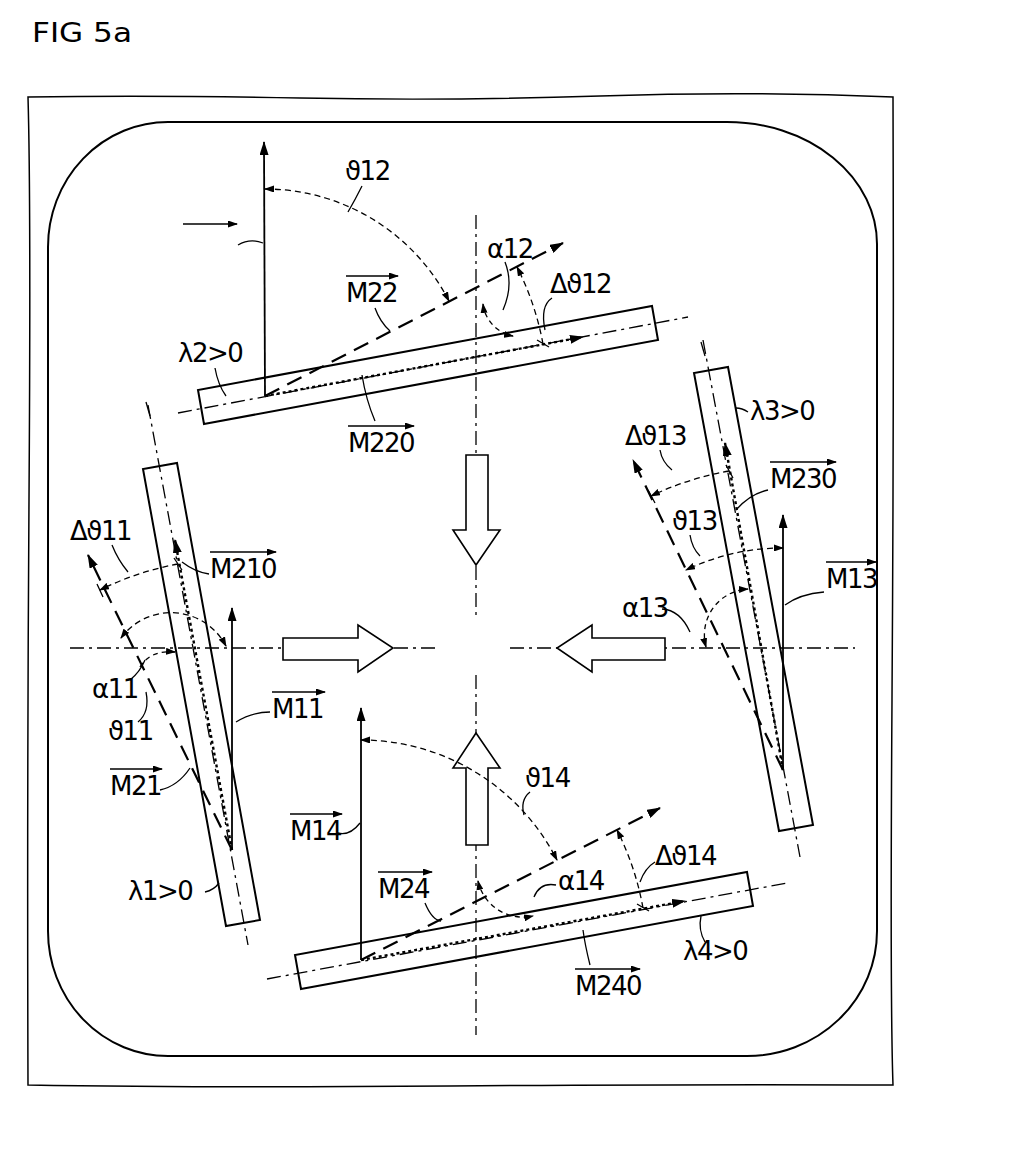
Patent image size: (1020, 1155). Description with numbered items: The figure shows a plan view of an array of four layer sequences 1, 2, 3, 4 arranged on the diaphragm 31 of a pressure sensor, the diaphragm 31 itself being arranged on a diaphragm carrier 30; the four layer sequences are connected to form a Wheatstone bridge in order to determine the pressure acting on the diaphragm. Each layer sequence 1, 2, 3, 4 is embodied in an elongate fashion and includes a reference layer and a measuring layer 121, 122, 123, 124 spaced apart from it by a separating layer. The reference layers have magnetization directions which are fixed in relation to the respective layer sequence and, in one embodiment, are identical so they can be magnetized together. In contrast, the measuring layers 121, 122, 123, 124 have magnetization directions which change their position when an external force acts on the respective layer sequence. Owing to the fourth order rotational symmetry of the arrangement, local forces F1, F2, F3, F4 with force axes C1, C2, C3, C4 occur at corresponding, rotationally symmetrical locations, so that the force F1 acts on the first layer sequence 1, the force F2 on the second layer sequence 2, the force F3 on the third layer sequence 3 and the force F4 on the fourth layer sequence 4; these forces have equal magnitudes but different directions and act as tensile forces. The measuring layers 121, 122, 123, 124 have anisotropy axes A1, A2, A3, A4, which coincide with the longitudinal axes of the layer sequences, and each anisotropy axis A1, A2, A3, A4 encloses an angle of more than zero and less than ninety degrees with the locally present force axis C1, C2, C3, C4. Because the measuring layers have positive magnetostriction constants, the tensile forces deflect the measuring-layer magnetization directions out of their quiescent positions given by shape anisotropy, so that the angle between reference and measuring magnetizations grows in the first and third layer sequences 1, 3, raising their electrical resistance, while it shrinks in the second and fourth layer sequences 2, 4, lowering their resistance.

The diaphragm carrier 30 is at (750, 100).
The diaphragm 31 is at (832, 160).
The first layer sequence 1 is at (181, 487).
The second layer sequence 2 is at (560, 345).
The third layer sequence 3 is at (806, 805).
The fourth layer sequence 4 is at (326, 950).
The measuring layer 121 is at (187, 520).
The measuring layer 122 is at (248, 416).
The measuring layer 123 is at (802, 771).
The measuring layer 124 is at (330, 985).
The anisotropy axis A1 is at (146, 410).
The anisotropy axis A2 is at (678, 315).
The anisotropy axis A3 is at (706, 350).
The anisotropy axis A4 is at (774, 888).
The force axis C1 is at (445, 646).
The force axis C2 is at (476, 225).
The force axis C3 is at (682, 619).
The force axis C4 is at (476, 690).
The local force F1 is at (333, 604).
The local force F2 is at (520, 474).
The local force F3 is at (633, 674).
The local force F4 is at (458, 799).